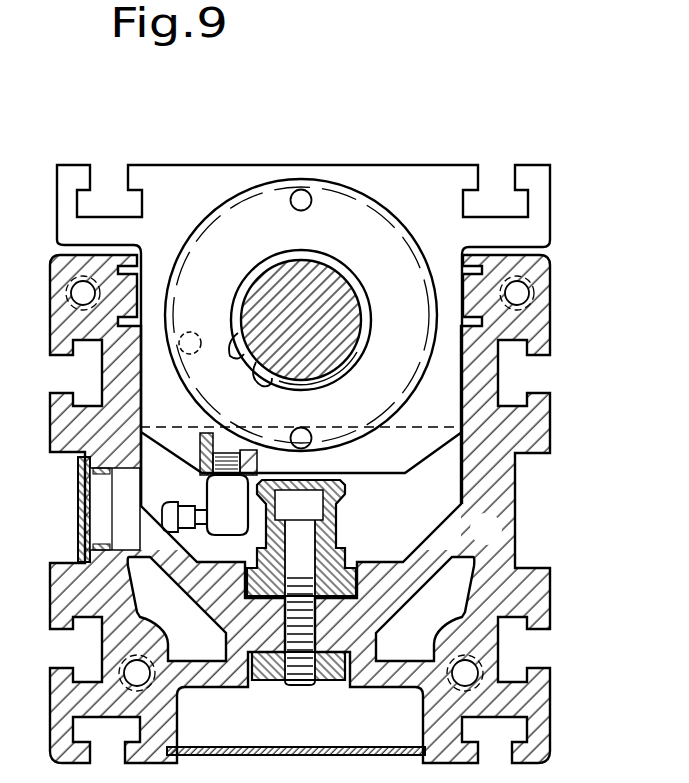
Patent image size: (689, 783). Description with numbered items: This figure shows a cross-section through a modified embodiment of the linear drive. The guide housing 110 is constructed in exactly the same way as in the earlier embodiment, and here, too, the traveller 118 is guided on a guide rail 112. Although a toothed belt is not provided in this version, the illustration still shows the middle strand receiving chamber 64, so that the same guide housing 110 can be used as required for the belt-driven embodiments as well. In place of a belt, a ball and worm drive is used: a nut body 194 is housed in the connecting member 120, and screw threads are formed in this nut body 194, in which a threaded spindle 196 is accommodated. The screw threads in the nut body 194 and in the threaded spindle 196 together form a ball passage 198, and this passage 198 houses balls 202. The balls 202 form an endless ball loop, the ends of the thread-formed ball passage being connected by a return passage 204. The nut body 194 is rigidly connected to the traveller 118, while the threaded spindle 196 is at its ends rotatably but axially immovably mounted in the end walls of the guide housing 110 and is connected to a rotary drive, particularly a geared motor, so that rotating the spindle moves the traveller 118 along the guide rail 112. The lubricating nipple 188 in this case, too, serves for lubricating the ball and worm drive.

The guide housing 110 is at (543, 498).
The traveller 118 is at (428, 522).
The connecting member 120 is at (452, 378).
The nut body 194 is at (353, 208).
The threaded spindle 196 is at (327, 297).
The ball passage 198 is at (276, 258).
The balls 202 is at (240, 360).
The return passage 204 is at (179, 343).
The lubricating nipple 188 is at (177, 517).
The guide rail 112 is at (330, 537).
The middle strand receiving chamber 64 is at (296, 732).